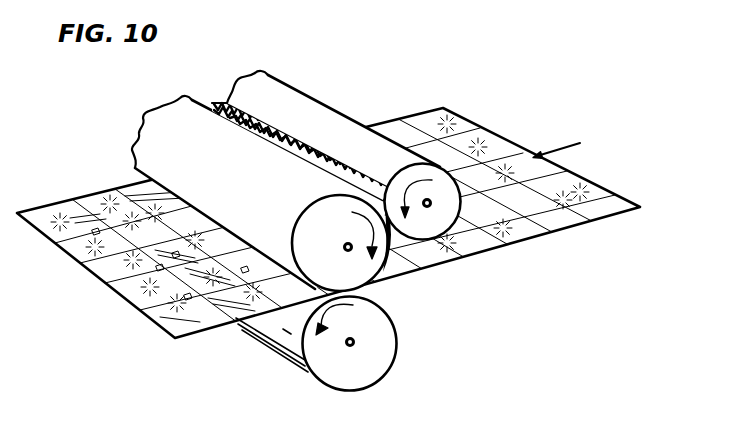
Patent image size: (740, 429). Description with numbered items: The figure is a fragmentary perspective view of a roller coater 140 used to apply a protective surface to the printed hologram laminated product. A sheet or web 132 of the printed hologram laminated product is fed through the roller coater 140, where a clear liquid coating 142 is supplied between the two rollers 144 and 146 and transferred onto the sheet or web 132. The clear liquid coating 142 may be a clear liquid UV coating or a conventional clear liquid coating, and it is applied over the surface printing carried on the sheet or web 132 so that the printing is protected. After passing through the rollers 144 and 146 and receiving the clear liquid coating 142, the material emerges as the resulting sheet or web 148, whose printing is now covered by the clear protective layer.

The sheet or web 132 is at (549, 229).
The roller coater 140 is at (384, 385).
The clear liquid coating 142 is at (219, 106).
The roller 144 is at (150, 138).
The roller 146 is at (260, 83).
The resulting sheet or web 148 is at (203, 323).